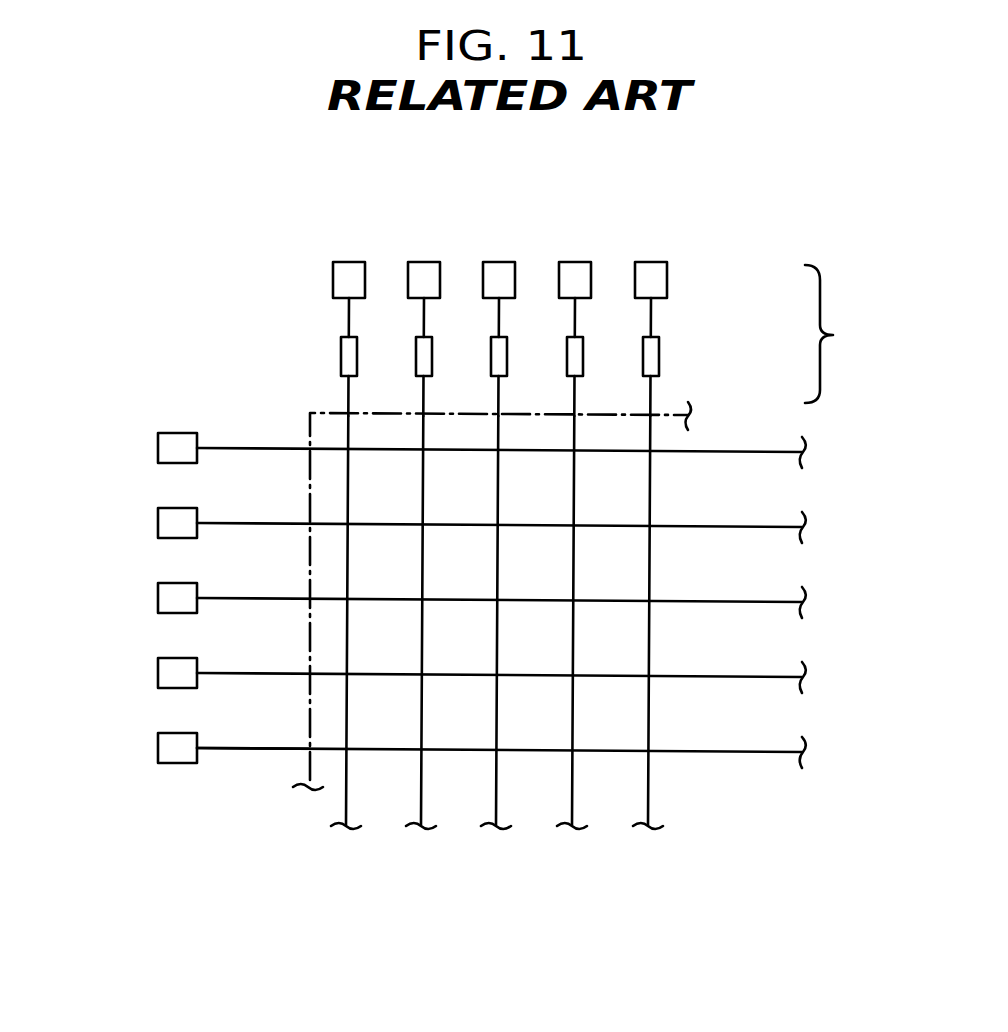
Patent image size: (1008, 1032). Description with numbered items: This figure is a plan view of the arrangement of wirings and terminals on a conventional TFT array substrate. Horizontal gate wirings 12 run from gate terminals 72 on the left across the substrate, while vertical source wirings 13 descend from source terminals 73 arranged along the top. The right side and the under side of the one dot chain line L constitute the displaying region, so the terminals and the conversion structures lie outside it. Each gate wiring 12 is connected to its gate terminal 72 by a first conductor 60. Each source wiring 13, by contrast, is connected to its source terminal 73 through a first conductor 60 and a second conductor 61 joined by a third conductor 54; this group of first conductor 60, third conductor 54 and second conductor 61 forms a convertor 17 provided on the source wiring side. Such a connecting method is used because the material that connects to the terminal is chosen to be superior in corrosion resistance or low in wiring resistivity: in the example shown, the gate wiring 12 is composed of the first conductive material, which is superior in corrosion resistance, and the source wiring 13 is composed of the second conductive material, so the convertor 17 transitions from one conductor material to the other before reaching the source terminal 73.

The source terminal 73 is at (660, 273).
The first conductor 60 is at (652, 318).
The third conductor 54 is at (652, 355).
The second conductor 61 is at (652, 389).
The convertor 17 is at (850, 334).
The gate terminal 72 is at (168, 448).
The gate wiring 12 is at (771, 529).
The source wiring 13 is at (498, 788).
The one dot chain line L is at (308, 762).